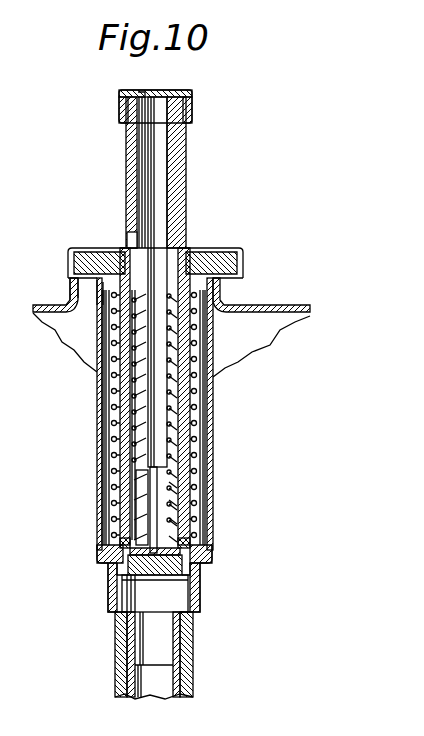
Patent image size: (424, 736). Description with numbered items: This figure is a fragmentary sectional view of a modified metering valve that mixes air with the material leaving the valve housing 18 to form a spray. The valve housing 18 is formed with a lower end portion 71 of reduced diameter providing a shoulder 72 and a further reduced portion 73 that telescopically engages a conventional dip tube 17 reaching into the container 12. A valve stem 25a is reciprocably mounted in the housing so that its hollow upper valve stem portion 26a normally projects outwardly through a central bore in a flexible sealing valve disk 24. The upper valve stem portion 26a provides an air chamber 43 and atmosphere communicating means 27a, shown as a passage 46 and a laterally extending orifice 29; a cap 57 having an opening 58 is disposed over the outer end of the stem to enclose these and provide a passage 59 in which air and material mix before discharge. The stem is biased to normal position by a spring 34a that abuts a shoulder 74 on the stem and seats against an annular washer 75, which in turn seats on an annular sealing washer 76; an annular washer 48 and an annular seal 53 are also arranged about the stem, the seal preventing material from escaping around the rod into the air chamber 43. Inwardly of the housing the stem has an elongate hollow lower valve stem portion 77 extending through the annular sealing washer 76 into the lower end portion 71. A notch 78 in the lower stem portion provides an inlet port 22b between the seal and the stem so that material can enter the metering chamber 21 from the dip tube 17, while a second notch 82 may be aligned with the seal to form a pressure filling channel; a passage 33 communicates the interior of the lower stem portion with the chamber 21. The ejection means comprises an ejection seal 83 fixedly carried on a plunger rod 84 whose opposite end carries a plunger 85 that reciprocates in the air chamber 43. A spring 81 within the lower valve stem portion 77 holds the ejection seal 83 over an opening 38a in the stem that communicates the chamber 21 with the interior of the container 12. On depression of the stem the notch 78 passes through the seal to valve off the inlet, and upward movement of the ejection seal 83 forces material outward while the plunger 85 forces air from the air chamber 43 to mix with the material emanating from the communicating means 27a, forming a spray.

The container 12 is at (268, 305).
The dip tube 17 is at (194, 663).
The valve housing 18 is at (213, 463).
The metering chamber 21 is at (197, 432).
The inlet port 22b is at (97, 563).
The sealing valve disk 24 is at (246, 258).
The valve stem 25a is at (186, 240).
The upper valve stem portion 26a is at (186, 178).
The atmosphere communicating means 27a is at (130, 172).
The lateral orifice 29 is at (127, 238).
The passage 33 is at (108, 325).
The spring 34a is at (140, 426).
The opening 38a is at (148, 586).
The air chamber 43 is at (158, 152).
The passage 46 is at (140, 202).
The annular washer 48 is at (116, 312).
The annular seal 53 is at (196, 300).
The cap 57 is at (192, 106).
The opening 58 is at (163, 92).
The passage 59 is at (142, 92).
The lower end portion 71 is at (110, 592).
The shoulder 72 is at (200, 576).
The further reduced portion 73 is at (126, 640).
The shoulder 74 is at (80, 289).
The annular washer 75 is at (192, 548).
The annular sealing washer 76 is at (213, 560).
The lower valve stem portion 77 is at (176, 512).
The notch 78 is at (117, 570).
The spring 81 is at (131, 494).
The second notch 82 is at (132, 478).
The ejection seal 83 is at (143, 580).
The plunger rod 84 is at (152, 532).
The plunger 85 is at (138, 396).